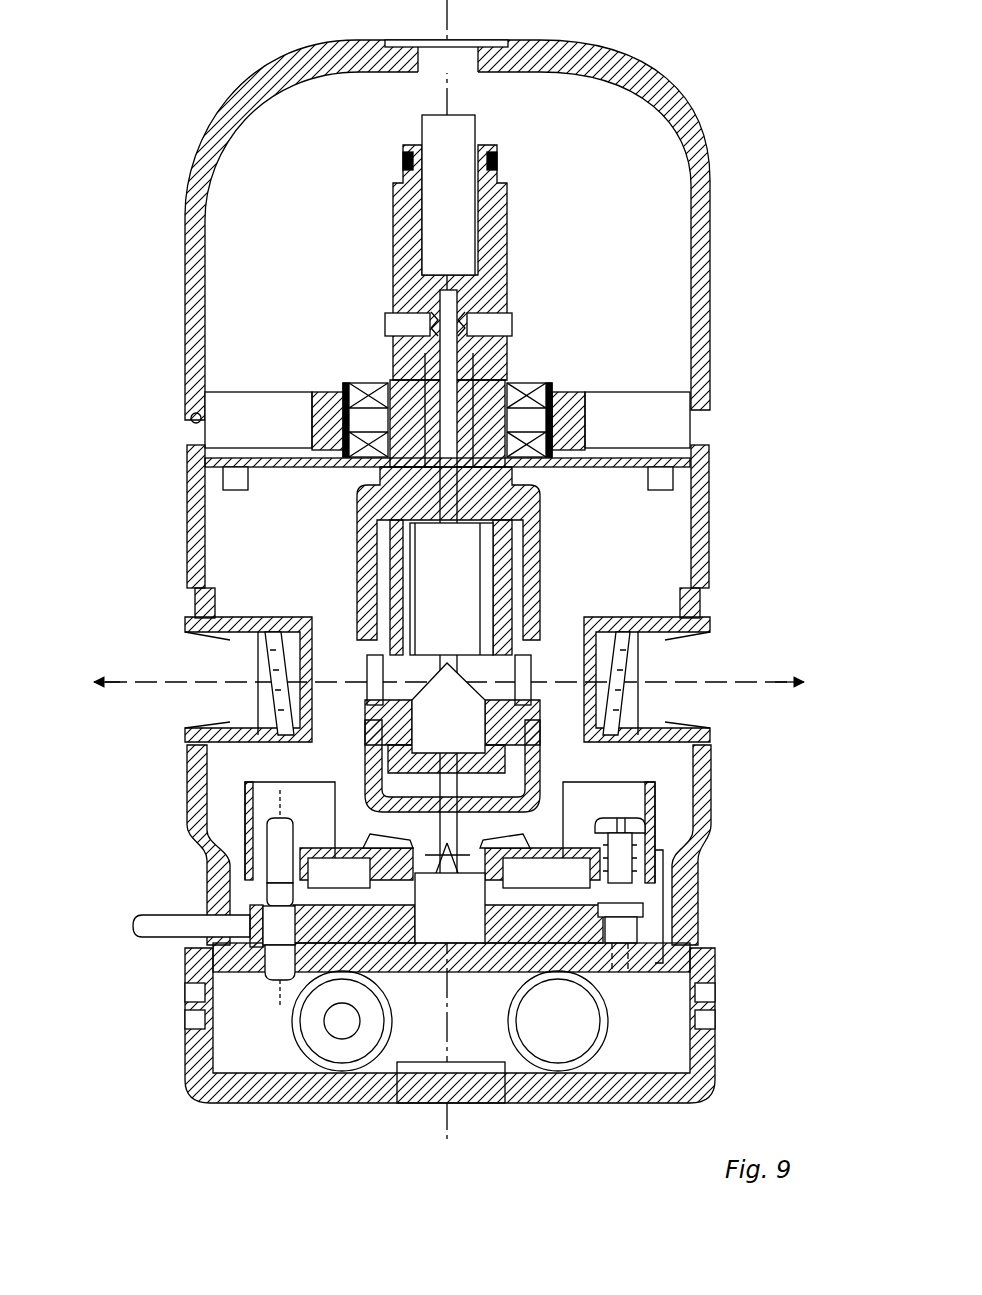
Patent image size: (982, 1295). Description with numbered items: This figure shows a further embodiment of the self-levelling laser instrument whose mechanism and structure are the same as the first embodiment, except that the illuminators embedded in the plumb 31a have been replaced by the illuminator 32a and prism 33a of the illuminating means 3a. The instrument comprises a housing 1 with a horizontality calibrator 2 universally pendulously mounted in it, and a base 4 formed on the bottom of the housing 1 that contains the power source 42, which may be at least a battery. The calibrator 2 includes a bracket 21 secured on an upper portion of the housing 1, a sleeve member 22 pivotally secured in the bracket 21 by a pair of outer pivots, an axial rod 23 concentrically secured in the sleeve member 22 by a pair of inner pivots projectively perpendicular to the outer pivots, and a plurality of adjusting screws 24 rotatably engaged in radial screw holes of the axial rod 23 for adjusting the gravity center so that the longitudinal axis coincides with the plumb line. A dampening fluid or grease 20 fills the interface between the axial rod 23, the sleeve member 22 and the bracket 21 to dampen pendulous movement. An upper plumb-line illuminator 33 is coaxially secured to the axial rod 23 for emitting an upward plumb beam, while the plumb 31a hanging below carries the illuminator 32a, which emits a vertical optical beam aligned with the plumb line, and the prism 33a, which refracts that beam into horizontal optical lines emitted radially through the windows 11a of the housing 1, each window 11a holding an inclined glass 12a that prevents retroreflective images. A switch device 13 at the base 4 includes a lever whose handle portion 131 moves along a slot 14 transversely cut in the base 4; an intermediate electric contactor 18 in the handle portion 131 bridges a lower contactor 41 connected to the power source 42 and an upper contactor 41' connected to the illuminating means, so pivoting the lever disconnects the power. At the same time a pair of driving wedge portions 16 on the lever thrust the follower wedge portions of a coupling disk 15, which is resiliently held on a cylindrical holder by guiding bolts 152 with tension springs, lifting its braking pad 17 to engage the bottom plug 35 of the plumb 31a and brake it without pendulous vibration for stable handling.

The housing 1 is at (701, 163).
The horizontality calibrator 2 is at (556, 364).
The illuminating means 3a is at (557, 492).
The base 4 is at (727, 1064).
The window 11a is at (213, 648).
The inclined glass 12a is at (270, 704).
The switch device 13 is at (595, 972).
The slot 14 is at (262, 930).
The coupling disk 15 is at (620, 848).
The driving wedge portions 16 is at (437, 970).
The braking pad 17 is at (610, 913).
The intermediate electric contactor 18 is at (280, 922).
The dampening fluid or grease 20 is at (343, 388).
The bracket 21 is at (285, 392).
The sleeve member 22 is at (387, 382).
The axial rod 23 is at (503, 357).
The adjusting screws 24 is at (400, 320).
The plumb 31a is at (365, 520).
The illuminator 32a is at (523, 570).
The upper plumb-line illuminator 33 is at (447, 132).
The prism 33a is at (437, 690).
The bottom plug 35 is at (527, 790).
The lower contactor 41 is at (207, 1011).
The upper contactor 41' is at (211, 844).
The power source 42 is at (343, 1050).
The handle portion 131 is at (150, 928).
The guiding bolts 152 is at (640, 855).